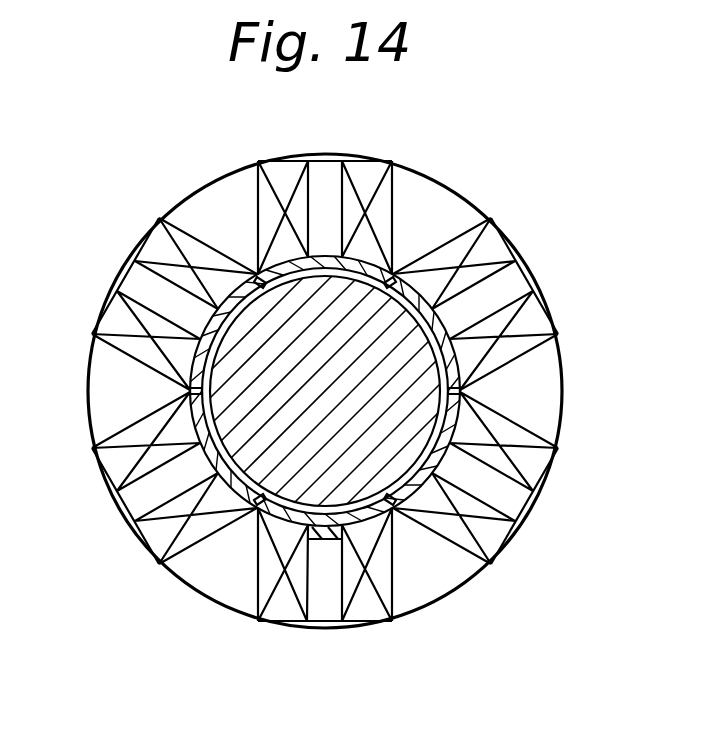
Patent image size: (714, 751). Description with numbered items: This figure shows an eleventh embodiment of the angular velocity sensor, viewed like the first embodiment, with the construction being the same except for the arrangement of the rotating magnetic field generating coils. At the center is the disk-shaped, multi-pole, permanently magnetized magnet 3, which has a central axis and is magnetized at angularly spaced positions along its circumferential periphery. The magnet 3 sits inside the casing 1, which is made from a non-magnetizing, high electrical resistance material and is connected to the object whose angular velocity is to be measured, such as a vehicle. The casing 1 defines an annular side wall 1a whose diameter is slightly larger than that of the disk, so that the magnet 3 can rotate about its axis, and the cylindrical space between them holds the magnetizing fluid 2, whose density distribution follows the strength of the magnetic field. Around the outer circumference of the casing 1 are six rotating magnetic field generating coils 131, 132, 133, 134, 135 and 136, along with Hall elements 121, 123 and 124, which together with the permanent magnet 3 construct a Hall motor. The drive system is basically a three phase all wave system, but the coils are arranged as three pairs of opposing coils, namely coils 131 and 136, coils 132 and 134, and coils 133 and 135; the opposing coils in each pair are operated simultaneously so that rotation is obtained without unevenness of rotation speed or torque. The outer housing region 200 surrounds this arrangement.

The casing 1 is at (370, 298).
The annular side wall 1a is at (548, 470).
The magnetizing fluid 2 is at (458, 382).
The disk-shaped, multi-pole, permanently magnetized magnet 3 is at (368, 276).
The Hall element 121 is at (330, 541).
The Hall element 123 is at (155, 230).
The Hall element 124 is at (472, 258).
The rotating magnetic field generating coil 131 is at (322, 190).
The rotating magnetic field generating coil 132 is at (142, 498).
The rotating magnetic field generating coil 133 is at (505, 478).
The rotating magnetic field generating coil 134 is at (497, 283).
The rotating magnetic field generating coil 135 is at (151, 279).
The rotating magnetic field generating coil 136 is at (323, 597).
The housing 200 is at (227, 190).